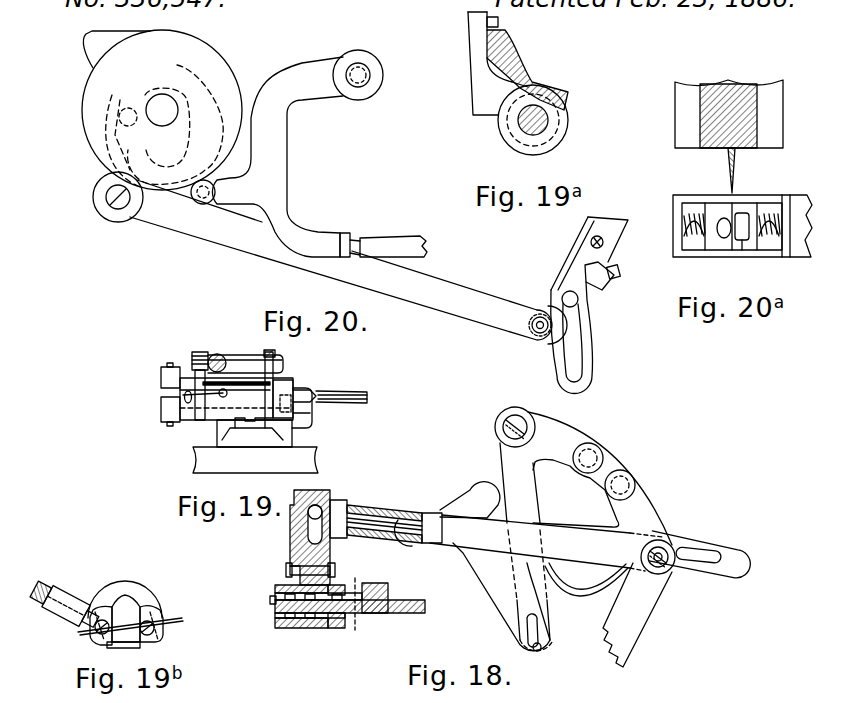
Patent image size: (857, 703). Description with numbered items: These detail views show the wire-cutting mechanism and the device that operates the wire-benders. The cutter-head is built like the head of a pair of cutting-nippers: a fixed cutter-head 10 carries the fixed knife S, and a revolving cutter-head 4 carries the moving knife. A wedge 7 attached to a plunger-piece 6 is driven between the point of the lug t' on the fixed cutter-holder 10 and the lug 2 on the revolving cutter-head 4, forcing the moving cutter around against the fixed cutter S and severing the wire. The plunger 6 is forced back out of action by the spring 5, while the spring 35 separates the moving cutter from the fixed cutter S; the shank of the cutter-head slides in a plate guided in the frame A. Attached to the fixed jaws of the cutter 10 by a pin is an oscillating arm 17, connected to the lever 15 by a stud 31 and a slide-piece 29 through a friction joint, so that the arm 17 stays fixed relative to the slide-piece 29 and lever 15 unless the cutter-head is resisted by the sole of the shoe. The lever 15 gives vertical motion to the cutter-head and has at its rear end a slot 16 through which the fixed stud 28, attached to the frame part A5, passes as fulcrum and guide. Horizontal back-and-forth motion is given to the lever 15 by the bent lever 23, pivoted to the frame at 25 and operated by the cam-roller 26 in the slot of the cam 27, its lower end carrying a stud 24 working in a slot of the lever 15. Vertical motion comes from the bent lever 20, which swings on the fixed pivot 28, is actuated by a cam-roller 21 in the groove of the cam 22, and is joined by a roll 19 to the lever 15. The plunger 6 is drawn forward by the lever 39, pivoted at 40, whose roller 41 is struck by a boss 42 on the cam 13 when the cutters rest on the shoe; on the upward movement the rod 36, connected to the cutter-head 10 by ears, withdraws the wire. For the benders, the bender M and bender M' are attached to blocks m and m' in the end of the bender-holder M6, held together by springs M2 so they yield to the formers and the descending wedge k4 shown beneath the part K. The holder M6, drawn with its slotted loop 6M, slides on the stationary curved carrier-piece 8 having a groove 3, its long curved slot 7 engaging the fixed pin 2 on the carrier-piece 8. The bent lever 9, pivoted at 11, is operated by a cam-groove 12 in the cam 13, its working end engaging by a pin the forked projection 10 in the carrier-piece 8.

In FIG. 20, the boss 42 is at (116, 38).
In FIG. 20, the cam-groove 12 is at (162, 110).
In FIG. 20, the cam 13 is at (120, 131).
In FIG. 18, the cam 13 is at (306, 564).
In FIG. 20, the pivot of bent lever 11 is at (116, 222).
In FIG. 20, the pivot of lever 40 is at (371, 76).
In FIG. 20, the lever 39 is at (281, 157).
In FIG. 20, the roller 41 is at (215, 182).
In FIG. 20, the plunger-piece 6 is at (388, 238).
In FIG. 19, the plunger-piece 6 is at (353, 395).
In FIG. 18, the plunger-piece 6 is at (360, 605).
In FIG. 20, the bent lever 9 is at (348, 262).
In FIG. 20, the fixed cutter-head 10 is at (540, 314).
In FIG. 19A, the fixed cutter-head 10 is at (507, 118).
In FIG. 19, the fixed cutter-head 10 is at (212, 410).
In FIG. 19B, the fixed cutter-head 10 is at (130, 596).
In FIG. 18, the fixed cutter-head 10 is at (308, 614).
In FIG. 20, the groove 3 is at (595, 215).
In FIG. 20, the carrier-piece 8 is at (607, 233).
In FIG. 20, the lug 2 is at (578, 301).
In FIG. 19A, the lug 2 is at (565, 95).
In FIG. 19, the lug 2 is at (296, 392).
In FIG. 20, the bender M is at (614, 276).
In FIG. 20A, the bender M is at (742, 209).
In FIG. 20, the bender-holder 6M is at (589, 336).
In FIG. 20, the wedge 7 is at (566, 350).
In FIG. 19, the wedge 7 is at (318, 391).
In FIG. 18, the wedge 7 is at (384, 591).
In FIG. 20A, the block K is at (729, 114).
In FIG. 20A, the wedge k4 is at (723, 170).
In FIG. 20A, the bender M' is at (756, 208).
In FIG. 20A, the bender-holder M6 is at (792, 198).
In FIG. 20A, the springs M2 is at (682, 230).
In FIG. 20A, the block m is at (714, 245).
In FIG. 20A, the block m' is at (741, 255).
In FIG. 19A, the lug t' is at (527, 70).
In FIG. 19, the lug t' is at (313, 408).
In FIG. 19, the frame A is at (255, 460).
In FIG. 19, the fixed knife S is at (161, 408).
In FIG. 19B, the fixed knife S is at (130, 628).
In FIG. 19, the spring 35 is at (178, 372).
In FIG. 19, the slide-piece 29 is at (201, 350).
In FIG. 18, the slide-piece 29 is at (418, 517).
In FIG. 19, the rod 36 is at (223, 348).
In FIG. 19, the fixed stud 28 is at (276, 355).
In FIG. 18, the fixed stud 28 is at (665, 578).
In FIG. 19B, the cutter-head 4 is at (123, 621).
In FIG. 18, the cutter-head 4 is at (305, 618).
In FIG. 18, the oscillating arm 17 is at (310, 529).
In FIG. 18, the stud 31 is at (340, 498).
In FIG. 18, the lever 15 is at (748, 545).
In FIG. 18, the bent lever 20 is at (546, 543).
In FIG. 18, the spring 5 is at (315, 626).
In FIG. 18, the pivot 25 is at (515, 417).
In FIG. 18, the bent lever 23 is at (586, 526).
In FIG. 18, the cam 27 is at (576, 493).
In FIG. 18, the cam-roller 26 is at (596, 456).
In FIG. 18, the cam-roller 21 is at (632, 481).
In FIG. 18, the slot 16 is at (700, 548).
In FIG. 18, the frame part A5 is at (637, 615).
In FIG. 18, the roll 19 is at (501, 597).
In FIG. 18, the stud 24 is at (536, 662).
In FIG. 18, the cam 22 is at (586, 579).